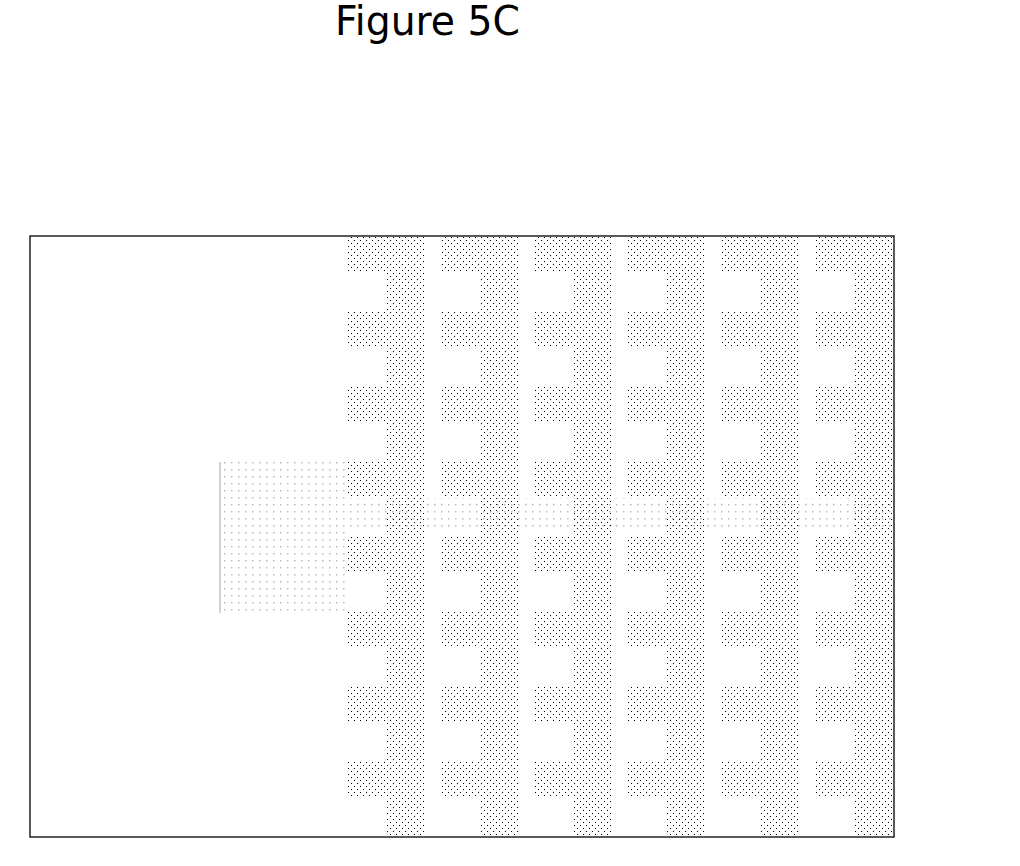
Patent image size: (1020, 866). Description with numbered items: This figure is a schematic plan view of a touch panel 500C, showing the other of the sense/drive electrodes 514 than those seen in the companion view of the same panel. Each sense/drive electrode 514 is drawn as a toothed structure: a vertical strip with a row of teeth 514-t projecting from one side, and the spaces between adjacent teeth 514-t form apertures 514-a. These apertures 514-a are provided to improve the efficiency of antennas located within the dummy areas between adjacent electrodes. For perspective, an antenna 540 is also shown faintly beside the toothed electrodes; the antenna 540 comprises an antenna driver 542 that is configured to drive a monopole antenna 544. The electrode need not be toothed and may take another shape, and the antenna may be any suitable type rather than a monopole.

The touch panel 500C is at (696, 145).
The sense/drive electrode 514 is at (383, 235).
The aperture 514-a is at (358, 292).
The tooth 514-t is at (348, 328).
The antenna 540 is at (184, 456).
The antenna driver 542 is at (220, 462).
The monopole antenna 544 is at (295, 537).